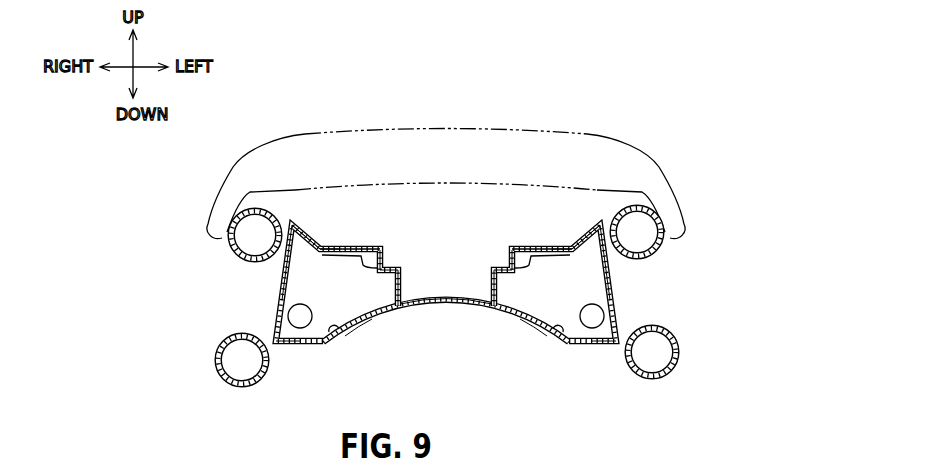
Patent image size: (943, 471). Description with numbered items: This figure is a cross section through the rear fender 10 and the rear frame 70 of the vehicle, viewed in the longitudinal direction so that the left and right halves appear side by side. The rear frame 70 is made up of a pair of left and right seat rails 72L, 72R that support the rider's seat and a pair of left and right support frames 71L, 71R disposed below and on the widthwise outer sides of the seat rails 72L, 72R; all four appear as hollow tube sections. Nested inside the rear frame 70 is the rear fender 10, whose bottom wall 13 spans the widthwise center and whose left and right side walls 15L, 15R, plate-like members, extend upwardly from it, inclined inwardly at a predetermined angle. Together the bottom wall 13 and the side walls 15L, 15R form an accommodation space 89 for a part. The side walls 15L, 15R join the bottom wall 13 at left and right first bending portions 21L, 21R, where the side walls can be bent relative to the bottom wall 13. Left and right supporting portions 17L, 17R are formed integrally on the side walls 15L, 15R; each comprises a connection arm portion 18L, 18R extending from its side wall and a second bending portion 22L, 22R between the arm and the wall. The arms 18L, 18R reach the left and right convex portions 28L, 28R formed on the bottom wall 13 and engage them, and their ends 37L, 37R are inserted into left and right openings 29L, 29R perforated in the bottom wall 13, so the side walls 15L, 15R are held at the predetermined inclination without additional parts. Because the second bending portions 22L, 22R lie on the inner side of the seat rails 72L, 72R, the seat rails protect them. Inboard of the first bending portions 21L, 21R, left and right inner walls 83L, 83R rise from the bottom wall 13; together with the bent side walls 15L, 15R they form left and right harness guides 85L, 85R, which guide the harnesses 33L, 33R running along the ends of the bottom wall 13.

The rear fender 10 is at (424, 317).
The bottom wall 13 is at (445, 308).
The right side wall 15R is at (272, 281).
The left side wall 15L is at (617, 273).
The right supporting portion 17R is at (347, 66).
The left supporting portion 17L is at (545, 66).
The right connection arm portion 18R is at (338, 243).
The left connection arm portion 18L is at (554, 243).
The right first bending portion 21R is at (271, 336).
The left first bending portion 21L is at (621, 337).
The right second bending portion 22R is at (290, 222).
The left second bending portion 22L is at (602, 222).
The right convex portion 28R is at (350, 234).
The left convex portion 28L is at (542, 234).
The right opening 29R is at (378, 273).
The left opening 29L is at (514, 273).
The right harness 33R is at (300, 318).
The left harness 33L is at (593, 318).
The end of right supporting piece 37R is at (407, 271).
The end of left supporting piece 37L is at (487, 271).
The rear frame 70 is at (127, 237).
The right support frame 71R is at (217, 360).
The left support frame 71L is at (677, 351).
The right seat rail 72R is at (228, 242).
The left seat rail 72L is at (664, 243).
The right inner wall 83R is at (358, 323).
The left inner wall 83L is at (532, 321).
The right harness guide 85R is at (334, 330).
The left harness guide 85L is at (558, 330).
The accommodation space 89 is at (446, 267).